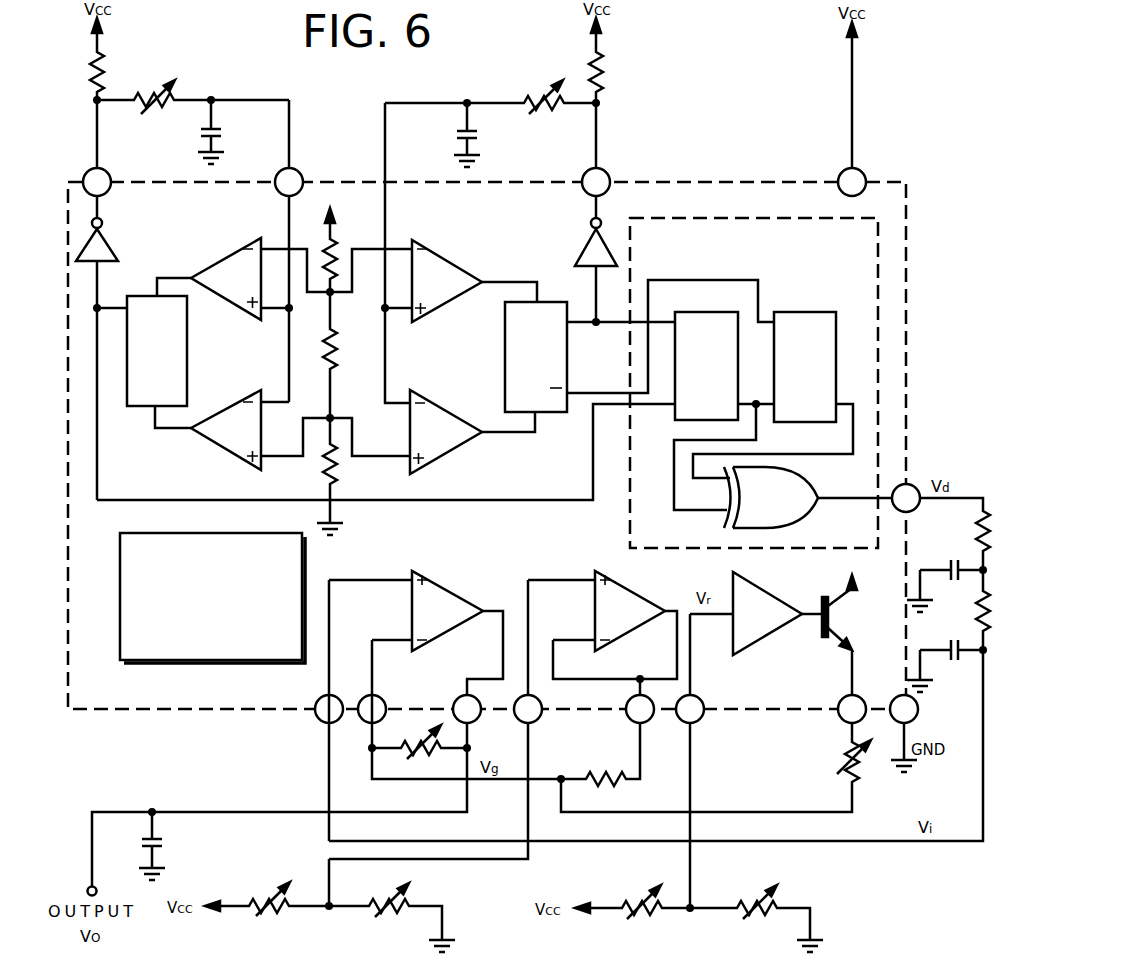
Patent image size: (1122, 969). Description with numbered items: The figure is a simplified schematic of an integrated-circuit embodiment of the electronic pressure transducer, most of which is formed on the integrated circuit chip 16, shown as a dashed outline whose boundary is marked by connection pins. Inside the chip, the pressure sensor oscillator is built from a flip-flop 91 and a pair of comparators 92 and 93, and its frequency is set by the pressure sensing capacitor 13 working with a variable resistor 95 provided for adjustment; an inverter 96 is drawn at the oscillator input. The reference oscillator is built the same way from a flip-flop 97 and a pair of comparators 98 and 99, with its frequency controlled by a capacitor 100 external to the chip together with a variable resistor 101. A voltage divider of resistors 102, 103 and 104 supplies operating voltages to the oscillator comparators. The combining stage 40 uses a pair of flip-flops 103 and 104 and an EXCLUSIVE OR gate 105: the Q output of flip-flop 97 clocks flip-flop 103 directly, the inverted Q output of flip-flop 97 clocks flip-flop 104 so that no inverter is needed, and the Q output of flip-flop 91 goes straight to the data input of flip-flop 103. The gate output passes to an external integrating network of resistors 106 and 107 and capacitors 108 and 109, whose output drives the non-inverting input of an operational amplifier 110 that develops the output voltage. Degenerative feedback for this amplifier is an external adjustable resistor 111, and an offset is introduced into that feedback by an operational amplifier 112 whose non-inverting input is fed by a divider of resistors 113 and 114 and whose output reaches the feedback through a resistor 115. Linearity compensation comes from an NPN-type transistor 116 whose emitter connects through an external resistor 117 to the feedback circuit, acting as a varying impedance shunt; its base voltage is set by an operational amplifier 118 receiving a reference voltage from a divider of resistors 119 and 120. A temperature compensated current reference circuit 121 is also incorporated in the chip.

The pressure sensing capacitor 13 is at (200, 133).
The integrated circuit chip 16 is at (909, 276).
The combining stage 40 is at (712, 218).
The flip-flop 91 is at (188, 343).
The comparator 92 is at (207, 262).
The comparator 93 is at (213, 446).
The variable resistor 95 is at (144, 91).
The inverter 96 is at (112, 236).
The flip-flop 97 is at (503, 332).
The comparator 98 is at (461, 268).
The comparator 99 is at (447, 456).
The capacitor 100 is at (457, 135).
The variable resistor 101 is at (530, 94).
The resistor 102 is at (334, 252).
The resistor / flip-flop 103 is at (334, 350).
The resistor / flip-flop 104 is at (334, 472).
The EXCLUSIVE OR gate 105 is at (797, 521).
The resistor 106 is at (978, 534).
The resistor 107 is at (984, 610).
The capacitor 108 is at (952, 567).
The capacitor 109 is at (954, 661).
The operational amplifier 110 is at (458, 598).
The adjustable resistor 111 is at (420, 739).
The operational amplifier 112 is at (640, 598).
The resistor 113 is at (266, 898).
The resistor 114 is at (381, 901).
The resistor 115 is at (603, 770).
The NPN-type transistor 116 is at (821, 630).
The external resistor 117 is at (844, 759).
The operational amplifier 118 is at (776, 642).
The resistor 119 is at (635, 899).
The resistor 120 is at (747, 901).
The temperature compensated current reference circuit 121 is at (118, 553).